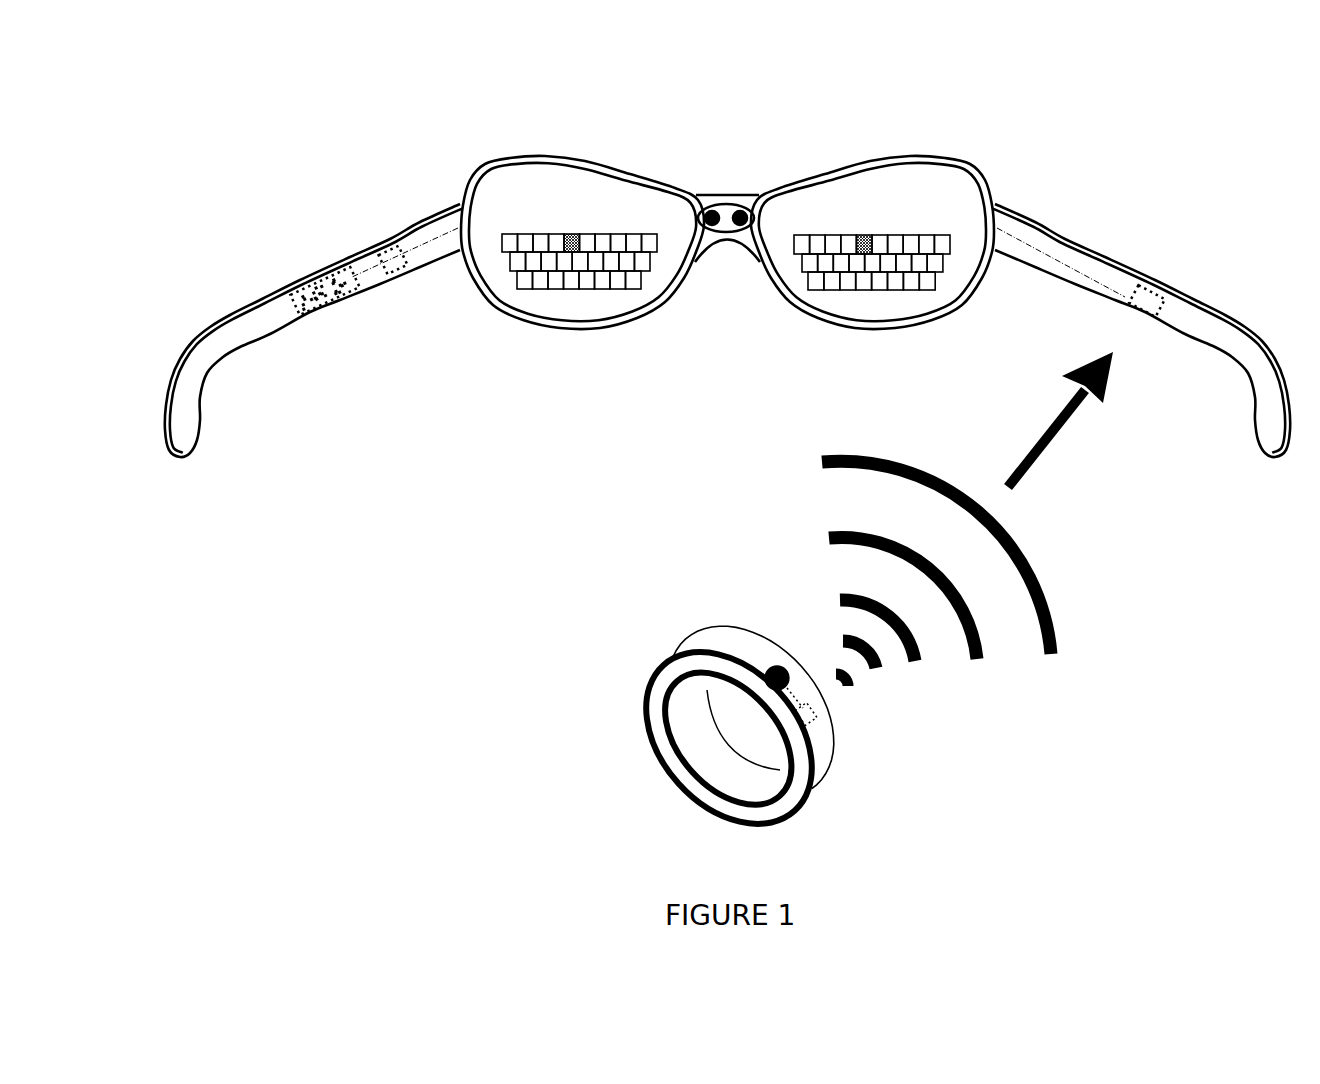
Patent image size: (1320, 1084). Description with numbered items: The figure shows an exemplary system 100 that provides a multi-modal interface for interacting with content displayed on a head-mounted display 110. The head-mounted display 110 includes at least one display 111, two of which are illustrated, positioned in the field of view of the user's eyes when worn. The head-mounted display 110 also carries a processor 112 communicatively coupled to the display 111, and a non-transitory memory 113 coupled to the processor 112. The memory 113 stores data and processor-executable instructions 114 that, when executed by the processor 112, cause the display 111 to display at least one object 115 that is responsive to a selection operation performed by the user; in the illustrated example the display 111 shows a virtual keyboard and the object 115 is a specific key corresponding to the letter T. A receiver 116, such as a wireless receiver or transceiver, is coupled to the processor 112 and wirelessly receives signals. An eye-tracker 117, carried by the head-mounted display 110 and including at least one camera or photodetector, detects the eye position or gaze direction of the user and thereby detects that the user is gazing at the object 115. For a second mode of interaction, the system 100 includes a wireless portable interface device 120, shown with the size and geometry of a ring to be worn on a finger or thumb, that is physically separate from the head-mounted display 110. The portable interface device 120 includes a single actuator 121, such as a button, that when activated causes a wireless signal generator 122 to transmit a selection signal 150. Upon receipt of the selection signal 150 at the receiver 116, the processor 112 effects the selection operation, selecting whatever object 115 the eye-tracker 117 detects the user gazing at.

The system 100 is at (163, 152).
The head-mounted display 110 is at (192, 398).
The display 111 is at (508, 180).
The processor 112 is at (397, 265).
The memory 113 is at (303, 303).
The instructions 114 is at (338, 287).
The object 115 is at (565, 230).
The receiver 116 is at (1148, 303).
The eye-tracker 117 is at (723, 210).
The portable interface device 120 is at (722, 647).
The actuator 121 is at (783, 673).
The wireless signal generator 122 is at (815, 715).
The selection signal 150 is at (1050, 652).